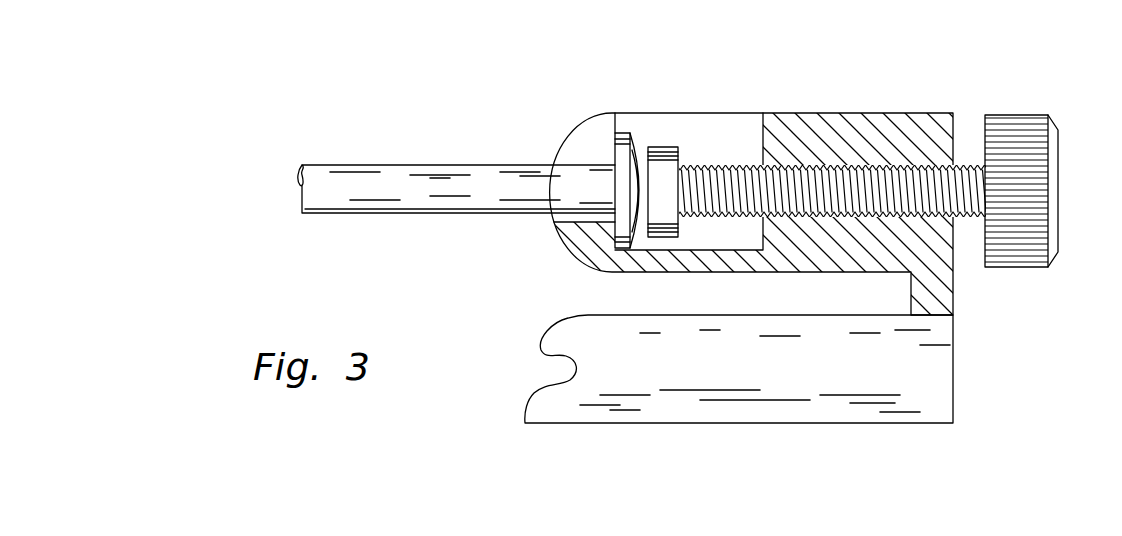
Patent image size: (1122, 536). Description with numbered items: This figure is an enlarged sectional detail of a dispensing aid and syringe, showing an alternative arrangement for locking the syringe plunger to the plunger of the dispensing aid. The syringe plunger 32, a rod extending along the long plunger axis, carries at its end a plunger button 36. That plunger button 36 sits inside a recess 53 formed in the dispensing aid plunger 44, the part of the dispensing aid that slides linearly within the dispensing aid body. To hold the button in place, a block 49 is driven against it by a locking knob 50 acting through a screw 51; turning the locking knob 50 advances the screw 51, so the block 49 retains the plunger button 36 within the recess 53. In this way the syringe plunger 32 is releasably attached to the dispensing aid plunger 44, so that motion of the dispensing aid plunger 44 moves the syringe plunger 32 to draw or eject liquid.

The plunger 32 is at (368, 215).
The plunger button 36 is at (627, 131).
The dispensing aid plunger 44 is at (818, 113).
The block 49 is at (659, 147).
The locking knob 50 is at (1016, 113).
The screw 51 is at (727, 165).
The recess 53 is at (620, 120).